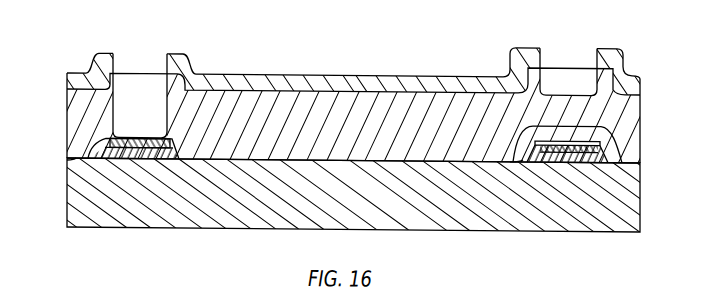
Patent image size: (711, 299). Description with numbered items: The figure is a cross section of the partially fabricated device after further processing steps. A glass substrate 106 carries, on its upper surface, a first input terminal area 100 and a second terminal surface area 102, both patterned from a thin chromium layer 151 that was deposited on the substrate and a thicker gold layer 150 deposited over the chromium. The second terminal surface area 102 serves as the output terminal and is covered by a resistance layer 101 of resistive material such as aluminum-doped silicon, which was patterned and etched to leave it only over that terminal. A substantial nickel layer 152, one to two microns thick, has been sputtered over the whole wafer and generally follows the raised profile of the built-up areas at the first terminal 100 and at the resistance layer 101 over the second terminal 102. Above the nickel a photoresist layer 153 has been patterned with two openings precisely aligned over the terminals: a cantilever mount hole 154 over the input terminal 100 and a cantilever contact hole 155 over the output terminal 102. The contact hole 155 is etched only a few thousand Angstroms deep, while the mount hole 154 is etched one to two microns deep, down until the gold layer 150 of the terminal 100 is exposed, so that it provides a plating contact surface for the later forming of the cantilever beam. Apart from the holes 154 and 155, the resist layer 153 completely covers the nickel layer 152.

The first input terminal area 100 is at (188, 142).
The resistance layer 101 is at (618, 136).
The second terminal surface area 102 is at (523, 140).
The glass substrate 106 is at (127, 214).
The gold layer 150 is at (80, 160).
The chromium layer 151 is at (160, 158).
The nickel layer 152 is at (90, 122).
The photoresist layer 153 is at (88, 59).
The cantilever mount hole 154 is at (134, 92).
The cantilever contact hole 155 is at (565, 66).